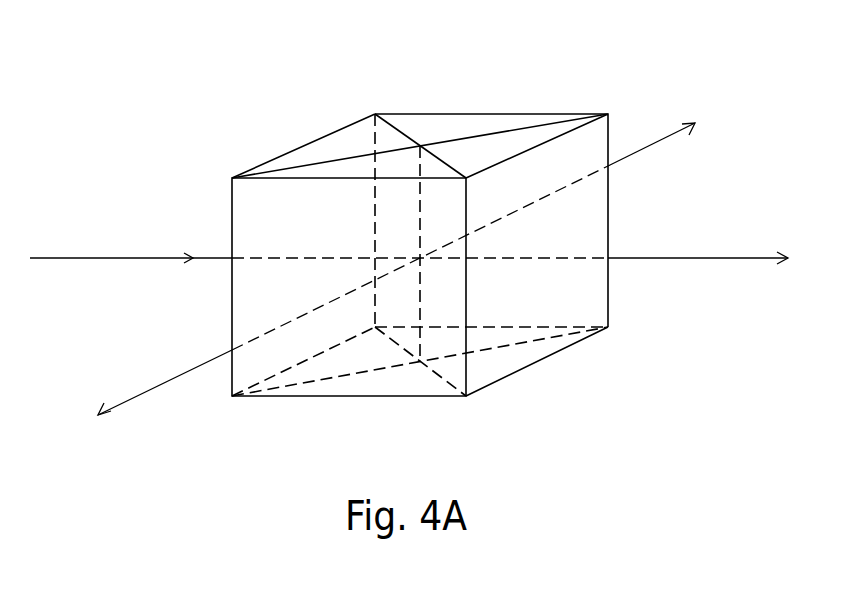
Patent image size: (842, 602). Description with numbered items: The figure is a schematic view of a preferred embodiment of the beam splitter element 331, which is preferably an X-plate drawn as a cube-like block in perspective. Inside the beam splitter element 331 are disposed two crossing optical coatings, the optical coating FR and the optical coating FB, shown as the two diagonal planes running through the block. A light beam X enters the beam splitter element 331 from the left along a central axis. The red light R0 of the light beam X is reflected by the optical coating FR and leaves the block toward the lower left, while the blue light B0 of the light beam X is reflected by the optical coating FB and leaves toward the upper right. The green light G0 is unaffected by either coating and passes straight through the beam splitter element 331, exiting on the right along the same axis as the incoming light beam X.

The beam splitter element 331 is at (345, 112).
The optical coating FR is at (400, 130).
The optical coating FB is at (500, 130).
The light beam X is at (131, 242).
The red light R0 is at (165, 382).
The green light G0 is at (510, 237).
The blue light B0 is at (463, 225).